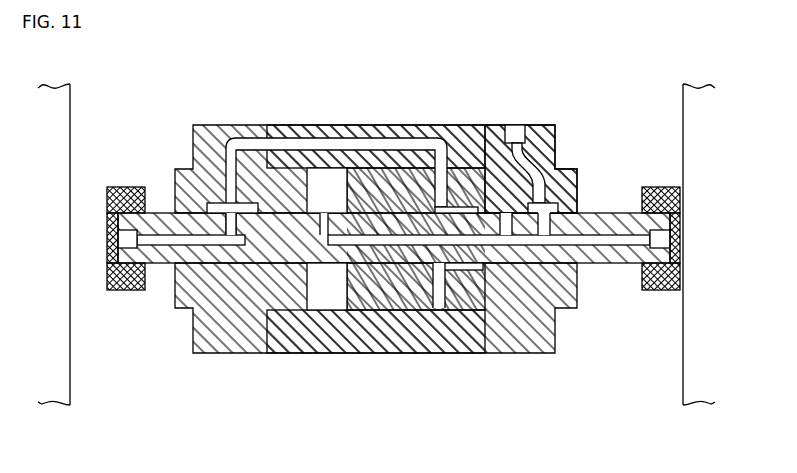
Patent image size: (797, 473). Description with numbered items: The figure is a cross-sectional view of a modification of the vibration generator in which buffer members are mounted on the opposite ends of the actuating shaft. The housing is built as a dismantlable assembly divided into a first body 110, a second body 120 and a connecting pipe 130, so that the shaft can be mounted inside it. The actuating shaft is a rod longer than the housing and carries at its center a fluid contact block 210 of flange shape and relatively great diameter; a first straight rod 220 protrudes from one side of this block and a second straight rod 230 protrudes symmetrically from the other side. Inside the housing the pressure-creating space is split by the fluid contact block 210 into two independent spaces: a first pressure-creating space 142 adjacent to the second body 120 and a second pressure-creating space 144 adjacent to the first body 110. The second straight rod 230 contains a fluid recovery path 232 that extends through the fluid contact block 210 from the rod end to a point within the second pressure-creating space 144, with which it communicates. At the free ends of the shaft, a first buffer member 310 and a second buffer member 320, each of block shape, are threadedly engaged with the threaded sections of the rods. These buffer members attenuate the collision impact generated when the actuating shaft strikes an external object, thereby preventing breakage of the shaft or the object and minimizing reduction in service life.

The first body 110 is at (215, 125).
The second body 120 is at (553, 125).
The connecting pipe 130 is at (447, 125).
The first pressure-creating space 142 is at (410, 156).
The second pressure-creating space 144 is at (323, 190).
The fluid contact block 210 is at (370, 168).
The first straight rod 220 is at (167, 213).
The second straight rod 230 is at (612, 266).
The fluid recovery path 232 is at (390, 243).
The first buffer member 310 is at (140, 290).
The second buffer member 320 is at (650, 290).